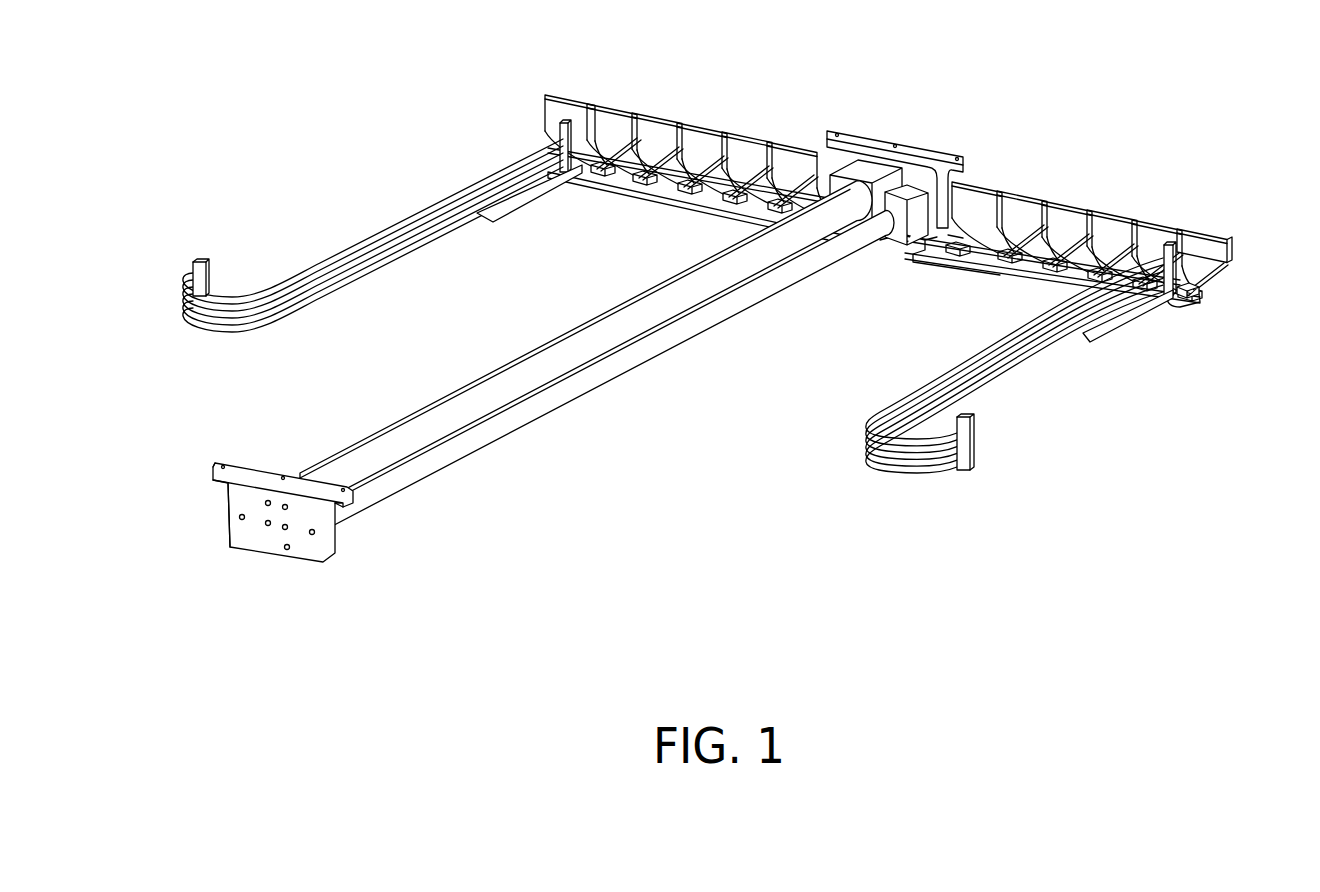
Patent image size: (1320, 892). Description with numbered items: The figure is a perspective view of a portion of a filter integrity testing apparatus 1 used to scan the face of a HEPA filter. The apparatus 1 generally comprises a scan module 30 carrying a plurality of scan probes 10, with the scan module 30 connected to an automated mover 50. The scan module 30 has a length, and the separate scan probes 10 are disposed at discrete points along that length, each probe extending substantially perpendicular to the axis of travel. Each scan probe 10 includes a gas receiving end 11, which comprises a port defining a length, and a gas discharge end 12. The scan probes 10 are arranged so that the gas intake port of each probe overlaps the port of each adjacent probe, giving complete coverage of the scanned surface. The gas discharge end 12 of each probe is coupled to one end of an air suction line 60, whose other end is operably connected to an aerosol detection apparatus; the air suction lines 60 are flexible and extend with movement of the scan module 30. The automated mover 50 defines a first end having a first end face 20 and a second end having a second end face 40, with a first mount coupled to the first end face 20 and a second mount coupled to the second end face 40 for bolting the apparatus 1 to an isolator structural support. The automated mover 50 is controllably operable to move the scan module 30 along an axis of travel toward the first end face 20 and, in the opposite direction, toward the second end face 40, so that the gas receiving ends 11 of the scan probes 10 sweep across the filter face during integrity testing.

The filter integrity testing apparatus 1 is at (487, 173).
The scan probe 10 is at (617, 147).
The gas receiving end 11 is at (632, 113).
The gas discharge end 12 is at (569, 127).
The first end face 20 is at (303, 547).
The scan module 30 is at (1180, 300).
The second end face 40 is at (923, 167).
The automated mover 50 is at (493, 393).
The air suction line 60 is at (888, 460).